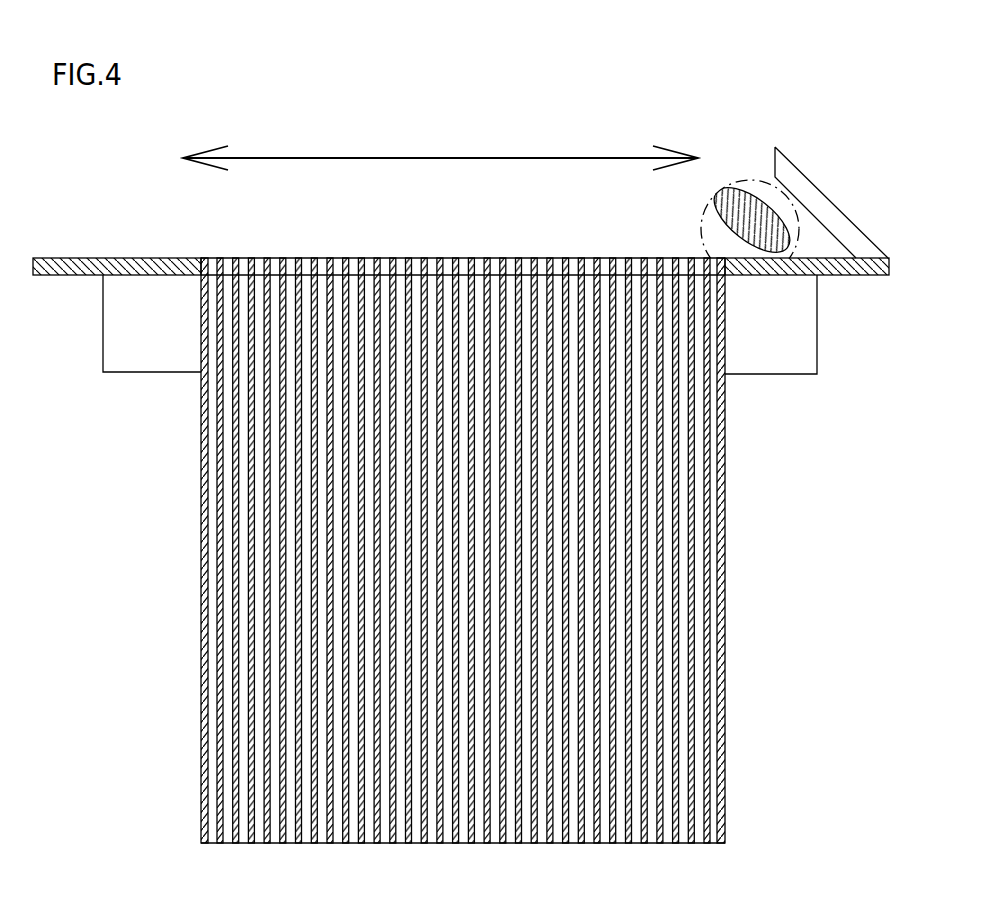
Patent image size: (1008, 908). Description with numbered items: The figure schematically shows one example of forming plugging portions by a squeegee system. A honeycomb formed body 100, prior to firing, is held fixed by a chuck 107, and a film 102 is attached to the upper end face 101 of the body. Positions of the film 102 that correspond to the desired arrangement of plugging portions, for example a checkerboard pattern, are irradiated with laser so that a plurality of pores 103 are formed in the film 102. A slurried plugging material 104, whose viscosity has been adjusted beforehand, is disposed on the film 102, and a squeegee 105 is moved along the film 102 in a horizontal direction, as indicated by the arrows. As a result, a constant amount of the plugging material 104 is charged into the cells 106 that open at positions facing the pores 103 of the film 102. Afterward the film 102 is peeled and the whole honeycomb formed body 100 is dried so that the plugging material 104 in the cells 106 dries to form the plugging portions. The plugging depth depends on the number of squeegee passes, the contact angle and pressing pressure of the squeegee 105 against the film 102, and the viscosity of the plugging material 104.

The honeycomb formed body 100 is at (770, 475).
The upper end face 101 is at (231, 258).
The film 102 is at (93, 258).
The pores 103 is at (321, 258).
The plugging material 104 is at (753, 186).
The squeegee 105 is at (808, 196).
The cells 106 is at (697, 423).
The chuck 107 is at (147, 355).